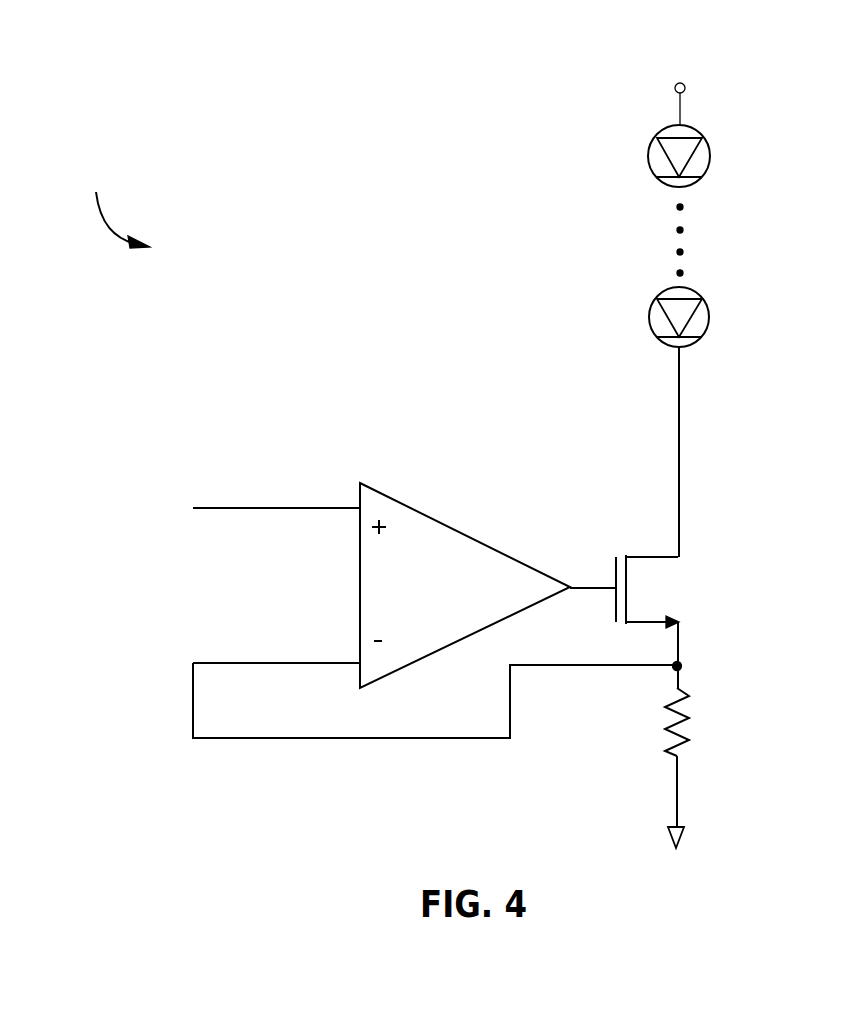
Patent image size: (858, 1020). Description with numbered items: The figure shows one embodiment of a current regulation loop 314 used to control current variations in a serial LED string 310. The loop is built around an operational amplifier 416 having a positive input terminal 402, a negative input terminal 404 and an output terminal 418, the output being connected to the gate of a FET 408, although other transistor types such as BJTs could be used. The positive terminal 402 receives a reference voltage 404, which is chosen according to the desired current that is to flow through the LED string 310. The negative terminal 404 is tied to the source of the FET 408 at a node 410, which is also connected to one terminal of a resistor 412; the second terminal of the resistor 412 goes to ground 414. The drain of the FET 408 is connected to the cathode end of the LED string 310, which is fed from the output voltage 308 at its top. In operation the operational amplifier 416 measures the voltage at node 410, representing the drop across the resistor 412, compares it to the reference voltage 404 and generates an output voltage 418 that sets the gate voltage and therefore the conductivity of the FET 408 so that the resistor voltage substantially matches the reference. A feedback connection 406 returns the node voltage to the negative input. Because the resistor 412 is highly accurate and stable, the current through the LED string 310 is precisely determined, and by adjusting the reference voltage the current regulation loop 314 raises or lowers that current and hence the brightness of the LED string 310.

The output voltage Vout terminal 308 is at (684, 84).
The serial LED string 310 is at (727, 120).
The current regulation loop 314 is at (108, 204).
The positive input terminal 402 is at (387, 512).
The negative input terminal 404 is at (430, 697).
The feedback path 406 is at (273, 662).
The FET 408 is at (650, 555).
The node 410 is at (681, 663).
The resistor 412 is at (689, 733).
The ground 414 is at (683, 832).
The operational amplifier 416 is at (465, 585).
The output terminal 418 is at (587, 592).